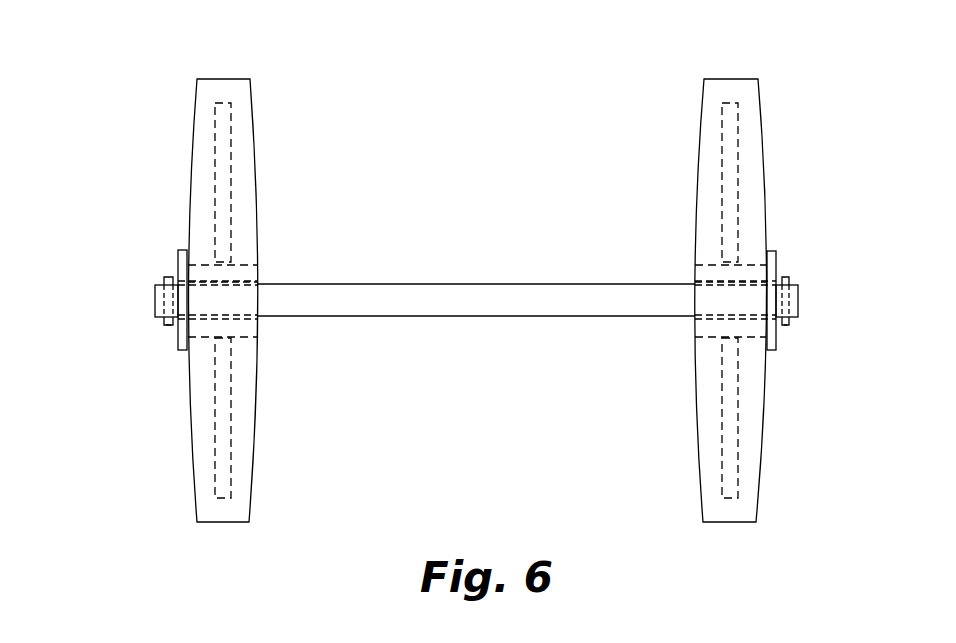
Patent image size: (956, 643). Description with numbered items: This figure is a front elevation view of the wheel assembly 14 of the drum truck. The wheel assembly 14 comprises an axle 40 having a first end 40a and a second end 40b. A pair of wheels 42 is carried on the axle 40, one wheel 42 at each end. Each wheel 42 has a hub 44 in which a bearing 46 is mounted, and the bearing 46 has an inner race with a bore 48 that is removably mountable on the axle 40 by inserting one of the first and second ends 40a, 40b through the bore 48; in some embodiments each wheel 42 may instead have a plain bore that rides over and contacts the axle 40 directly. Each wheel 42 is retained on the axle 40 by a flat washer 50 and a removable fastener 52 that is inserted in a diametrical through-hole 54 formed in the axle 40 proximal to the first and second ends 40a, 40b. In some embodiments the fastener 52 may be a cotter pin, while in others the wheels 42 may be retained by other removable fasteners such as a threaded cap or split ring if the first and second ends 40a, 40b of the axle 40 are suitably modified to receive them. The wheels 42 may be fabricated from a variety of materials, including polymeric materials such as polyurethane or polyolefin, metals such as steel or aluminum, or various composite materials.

The wheel assembly 14 is at (512, 107).
The axle 40 is at (395, 316).
The first end 40a is at (800, 309).
The second end 40b is at (153, 309).
The wheel 42 is at (222, 522).
The hub 44 is at (215, 192).
The bearing 46 is at (255, 272).
The bore 48 is at (258, 282).
The flat washer 50 is at (178, 253).
The removable fastener 52 is at (169, 327).
The diametrical through-hole 54 is at (165, 278).